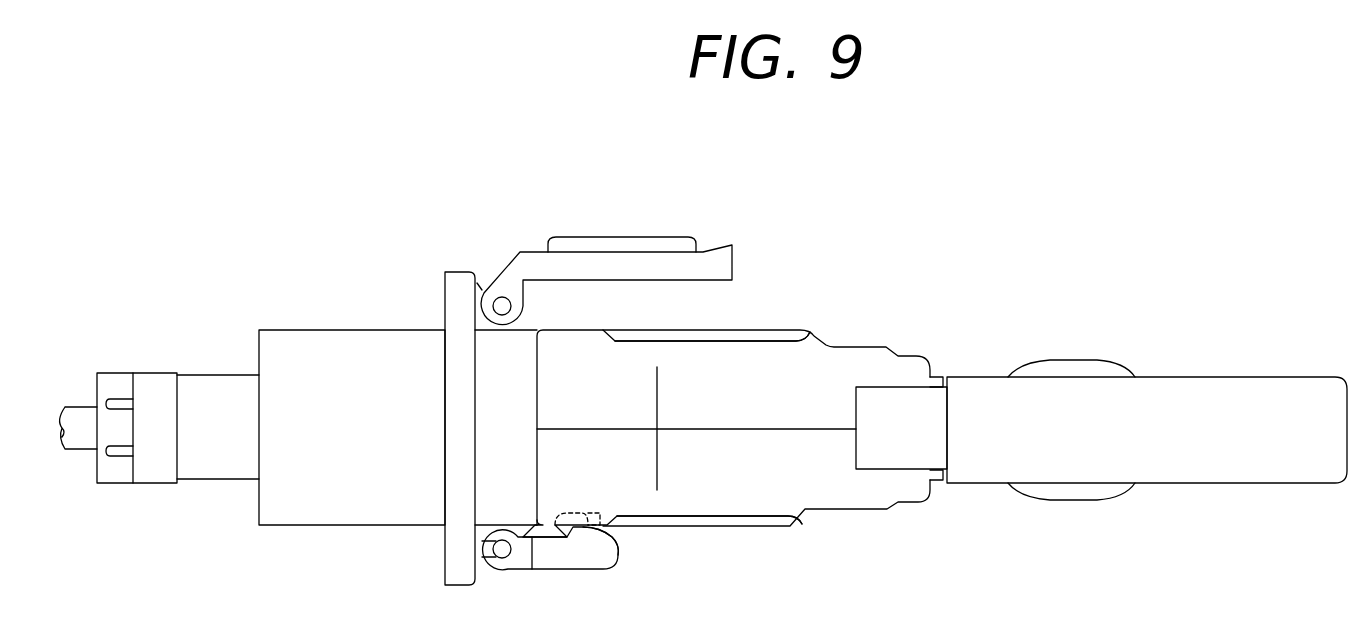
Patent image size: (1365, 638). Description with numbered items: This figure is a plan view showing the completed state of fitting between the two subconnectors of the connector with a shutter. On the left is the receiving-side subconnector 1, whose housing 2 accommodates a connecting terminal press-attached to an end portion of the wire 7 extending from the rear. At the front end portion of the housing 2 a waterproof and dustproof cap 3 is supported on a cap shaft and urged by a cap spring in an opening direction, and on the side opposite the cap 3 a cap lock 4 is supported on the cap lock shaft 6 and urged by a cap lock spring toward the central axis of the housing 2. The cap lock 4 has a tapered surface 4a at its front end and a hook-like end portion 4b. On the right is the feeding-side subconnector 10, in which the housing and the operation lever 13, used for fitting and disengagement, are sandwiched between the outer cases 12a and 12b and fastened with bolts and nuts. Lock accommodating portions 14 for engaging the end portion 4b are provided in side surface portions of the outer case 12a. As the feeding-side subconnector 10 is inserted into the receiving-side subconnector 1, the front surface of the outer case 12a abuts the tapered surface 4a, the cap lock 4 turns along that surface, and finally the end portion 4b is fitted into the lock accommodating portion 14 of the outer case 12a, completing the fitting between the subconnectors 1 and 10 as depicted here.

The receiving-side subconnector 1 is at (351, 249).
The housing 2 is at (321, 340).
The cap 3 is at (633, 257).
The cap lock 4 is at (582, 560).
The tapered surface 4a is at (612, 543).
The end portion 4b is at (565, 513).
The cap lock shaft 6 is at (502, 553).
The wire 7 is at (117, 453).
The feeding-side subconnector 10 is at (937, 255).
The outer case 12a is at (850, 497).
The outer case 12b is at (800, 353).
The operation lever 13 is at (1162, 388).
The lock accommodating portion 14 is at (592, 513).